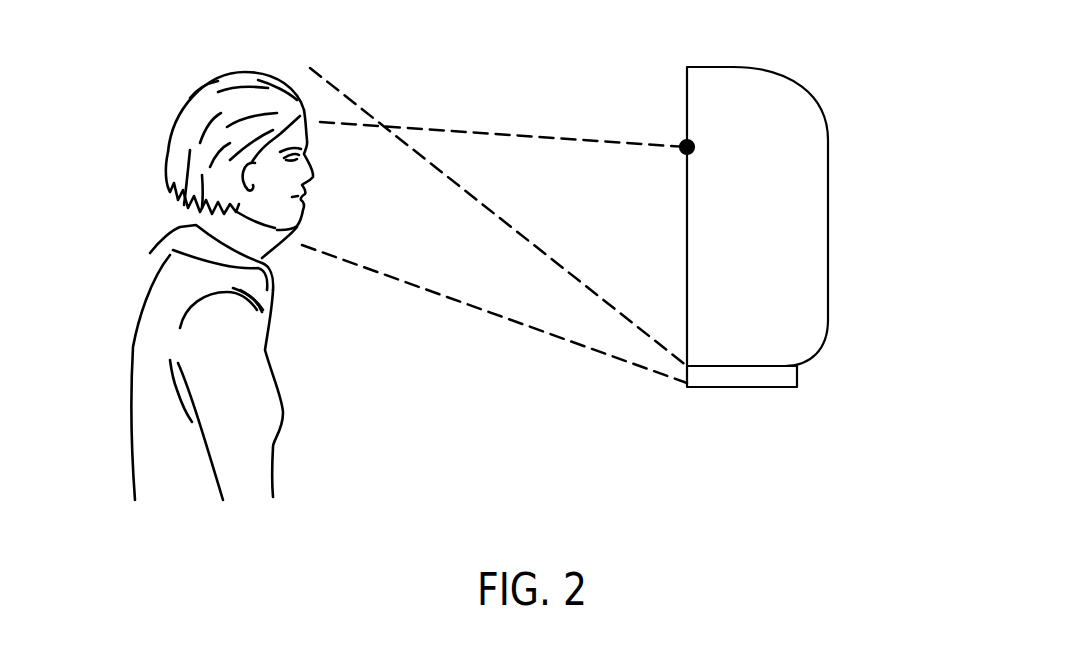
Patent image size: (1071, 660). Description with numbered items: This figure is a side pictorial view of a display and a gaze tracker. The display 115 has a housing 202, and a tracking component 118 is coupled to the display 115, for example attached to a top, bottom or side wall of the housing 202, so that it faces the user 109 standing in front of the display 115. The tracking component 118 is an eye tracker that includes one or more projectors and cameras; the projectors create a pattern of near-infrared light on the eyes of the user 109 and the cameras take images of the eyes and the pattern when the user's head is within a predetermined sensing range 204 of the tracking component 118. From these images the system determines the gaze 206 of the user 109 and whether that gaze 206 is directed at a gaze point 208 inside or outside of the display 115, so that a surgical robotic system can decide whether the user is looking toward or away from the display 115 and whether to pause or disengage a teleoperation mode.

The user 109 is at (145, 352).
The display 115 is at (808, 203).
The housing 202 is at (800, 83).
The tracking component 118 is at (798, 378).
The gaze point 208 is at (698, 147).
The gaze 206 is at (560, 137).
The predetermined sensing range 204 is at (478, 308).